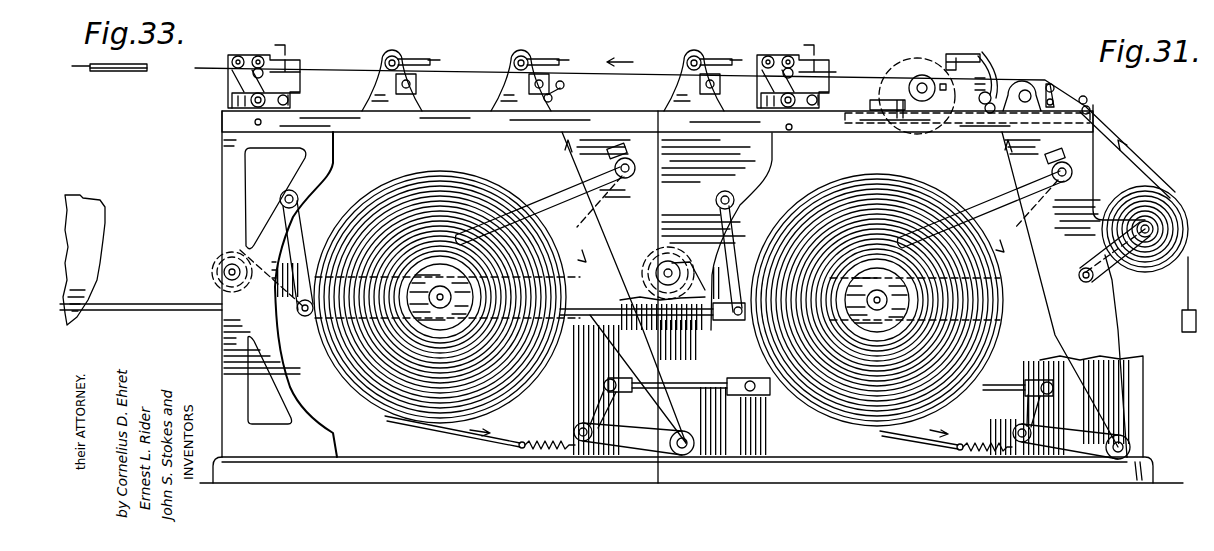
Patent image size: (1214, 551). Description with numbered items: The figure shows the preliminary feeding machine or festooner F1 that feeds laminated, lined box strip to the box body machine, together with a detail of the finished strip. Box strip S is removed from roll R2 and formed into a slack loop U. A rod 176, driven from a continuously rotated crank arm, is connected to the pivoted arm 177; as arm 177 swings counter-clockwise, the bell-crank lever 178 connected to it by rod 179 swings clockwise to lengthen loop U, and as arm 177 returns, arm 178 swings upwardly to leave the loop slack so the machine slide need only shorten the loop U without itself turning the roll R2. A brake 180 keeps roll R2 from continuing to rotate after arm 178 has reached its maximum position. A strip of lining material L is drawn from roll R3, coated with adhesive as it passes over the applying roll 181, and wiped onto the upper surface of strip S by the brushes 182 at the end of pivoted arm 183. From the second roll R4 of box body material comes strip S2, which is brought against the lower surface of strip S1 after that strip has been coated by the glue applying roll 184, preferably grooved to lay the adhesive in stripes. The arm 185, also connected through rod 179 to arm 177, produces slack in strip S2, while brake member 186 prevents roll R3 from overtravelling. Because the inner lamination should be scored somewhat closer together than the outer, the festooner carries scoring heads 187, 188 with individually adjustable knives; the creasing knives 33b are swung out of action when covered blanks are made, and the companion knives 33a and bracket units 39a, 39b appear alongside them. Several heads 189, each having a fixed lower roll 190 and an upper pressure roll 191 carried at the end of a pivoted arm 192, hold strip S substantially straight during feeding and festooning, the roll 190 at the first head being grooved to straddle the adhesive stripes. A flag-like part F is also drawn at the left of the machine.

In FIG. 33, the strip of lining material L is at (78, 70).
In FIG. 31, the strip of lining material L is at (1118, 135).
In FIG. 31, the box strip S is at (208, 68).
In FIG. 33, the strip S1 is at (92, 72).
In FIG. 31, the strip S1 is at (1022, 218).
In FIG. 33, the strip S2 is at (128, 72).
In FIG. 31, the strip S2 is at (585, 215).
In FIG. 31, the flag F is at (100, 262).
In FIG. 31, the preliminary feeding machine or festooner F1 is at (772, 165).
In FIG. 31, the loop U is at (627, 350).
In FIG. 31, the roll R2 is at (893, 185).
In FIG. 31, the roll R3 is at (1128, 188).
In FIG. 31, the second roll of box body material R4 is at (470, 180).
In FIG. 31, the rod 176 is at (140, 312).
In FIG. 31, the pivoted arm 177 is at (738, 232).
In FIG. 31, the bell-crank lever 178 is at (1078, 446).
In FIG. 31, the rod 179 is at (980, 398).
In FIG. 31, the brake 180 is at (880, 437).
In FIG. 31, the applying roll 181 is at (1032, 86).
In FIG. 31, the brushes 182 is at (960, 52).
In FIG. 31, the pivoted arm 183 is at (983, 50).
In FIG. 31, the glue applying roll 184 is at (940, 72).
In FIG. 31, the arm 185 is at (640, 445).
In FIG. 31, the brake member 186 is at (452, 432).
In FIG. 31, the scoring head 187 is at (836, 66).
In FIG. 31, the scoring head 188 is at (305, 54).
In FIG. 31, the heads 189 is at (708, 56).
In FIG. 31, the fixed lower roll 190 is at (720, 80).
In FIG. 31, the upper pressure roll 191 is at (735, 62).
In FIG. 31, the pivoted arm 192 is at (755, 56).
In FIG. 31, the roller 33a is at (828, 96).
In FIG. 31, the scoring or creasing knives 33b is at (300, 100).
In FIG. 31, the bracket 39a is at (760, 97).
In FIG. 31, the bracket 39b is at (240, 110).